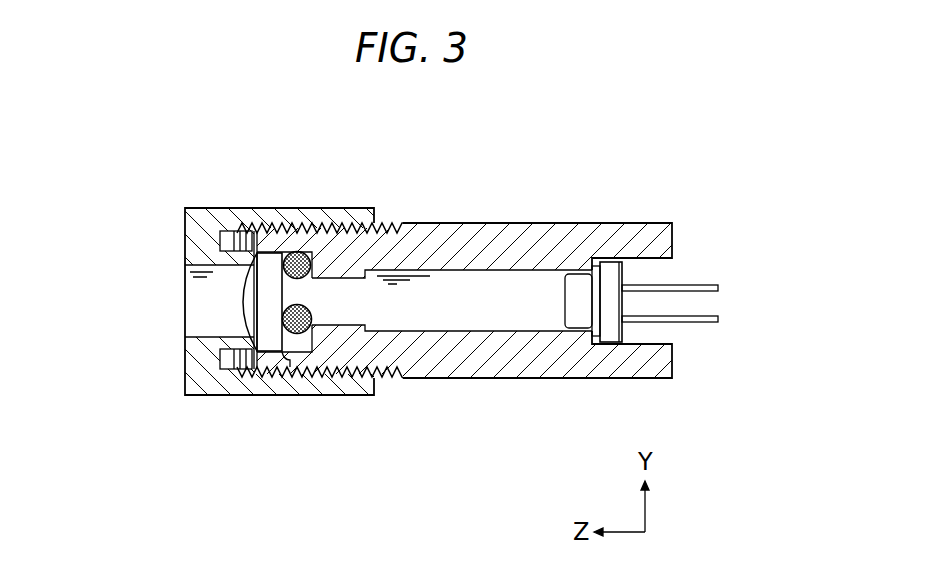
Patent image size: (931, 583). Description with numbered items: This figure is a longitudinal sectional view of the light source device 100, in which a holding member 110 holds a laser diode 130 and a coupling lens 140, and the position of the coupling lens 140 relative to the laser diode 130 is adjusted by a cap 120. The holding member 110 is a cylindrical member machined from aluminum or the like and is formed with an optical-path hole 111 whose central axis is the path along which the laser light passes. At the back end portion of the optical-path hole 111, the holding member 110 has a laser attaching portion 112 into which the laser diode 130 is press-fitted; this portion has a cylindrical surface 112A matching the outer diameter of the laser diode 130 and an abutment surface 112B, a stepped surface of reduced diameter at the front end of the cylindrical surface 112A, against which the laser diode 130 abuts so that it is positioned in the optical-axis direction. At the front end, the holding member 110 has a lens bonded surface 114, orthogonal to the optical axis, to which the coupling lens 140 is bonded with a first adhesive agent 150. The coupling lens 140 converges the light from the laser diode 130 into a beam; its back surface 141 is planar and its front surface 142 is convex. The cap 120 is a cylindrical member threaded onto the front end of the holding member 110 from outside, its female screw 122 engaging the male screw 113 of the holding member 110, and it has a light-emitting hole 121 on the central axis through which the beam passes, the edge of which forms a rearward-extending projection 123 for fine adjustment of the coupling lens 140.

The light source device 100 is at (545, 154).
The holding member 110 is at (583, 220).
The optical-path hole 111 is at (463, 317).
The laser attaching portion 112 is at (650, 334).
The cylindrical surface 112A is at (634, 344).
The abutment surface 112B is at (603, 344).
The male screw 113 is at (387, 224).
The lens bonded surface 114 is at (309, 375).
The cap 120 is at (207, 205).
The light-emitting hole 121 is at (196, 326).
The female screw 122 is at (244, 230).
The projection 123 is at (234, 263).
The laser diode 130 is at (626, 270).
The coupling lens 140 is at (202, 321).
The back surface 141 is at (268, 367).
The front surface 142 is at (233, 307).
The first adhesive agent 150 is at (298, 251).